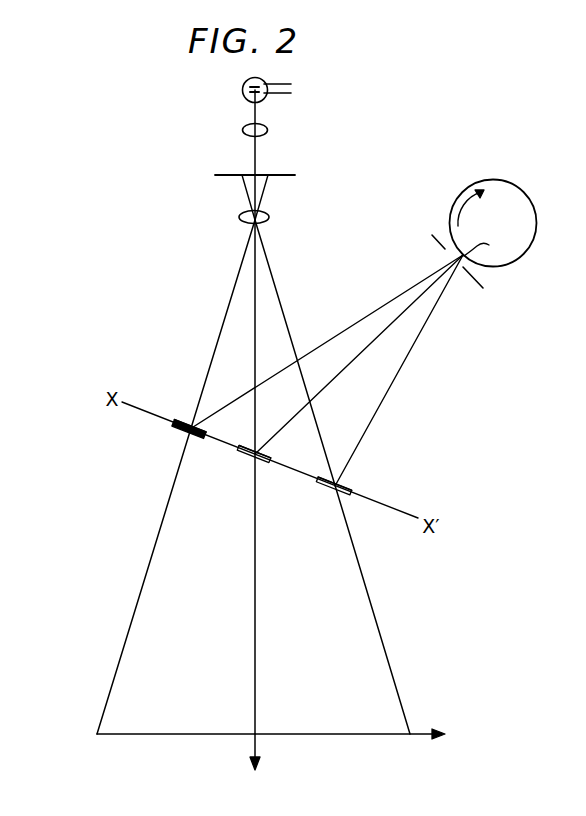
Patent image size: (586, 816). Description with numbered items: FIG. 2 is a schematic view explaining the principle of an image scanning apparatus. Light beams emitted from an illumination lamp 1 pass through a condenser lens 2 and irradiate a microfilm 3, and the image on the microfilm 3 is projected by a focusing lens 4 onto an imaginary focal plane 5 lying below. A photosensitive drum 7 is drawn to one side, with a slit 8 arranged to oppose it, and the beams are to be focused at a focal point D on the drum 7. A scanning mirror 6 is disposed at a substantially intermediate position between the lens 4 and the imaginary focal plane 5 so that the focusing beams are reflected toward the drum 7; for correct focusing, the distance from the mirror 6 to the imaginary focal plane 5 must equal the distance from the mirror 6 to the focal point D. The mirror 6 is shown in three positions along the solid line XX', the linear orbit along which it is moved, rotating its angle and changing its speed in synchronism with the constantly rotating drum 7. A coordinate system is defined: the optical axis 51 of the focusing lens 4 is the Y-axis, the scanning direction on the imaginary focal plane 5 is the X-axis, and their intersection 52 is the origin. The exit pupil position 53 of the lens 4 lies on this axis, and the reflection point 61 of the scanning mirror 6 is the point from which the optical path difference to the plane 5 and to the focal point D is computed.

The illumination lamp 1 is at (242, 90).
The condenser lens 2 is at (242, 130).
The microfilm 3 is at (226, 175).
The exit pupil position 53 is at (240, 215).
The focusing lens 4 is at (270, 216).
The photosensitive drum 7 is at (540, 214).
The slit 8 is at (431, 244).
The scanning mirror 6 is at (180, 438).
The reflection point 61 is at (190, 421).
The optical axis 51 is at (257, 650).
The intersection 52 is at (257, 733).
The imaginary focal plane 5 is at (333, 736).